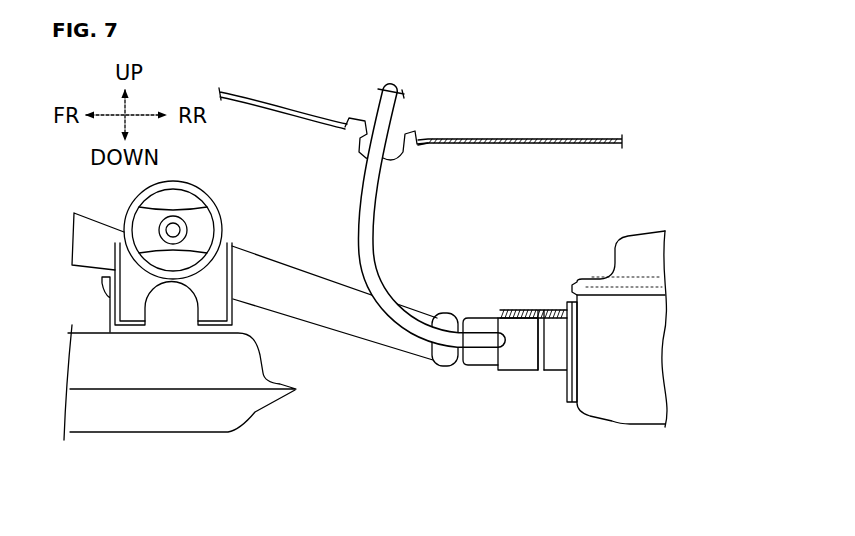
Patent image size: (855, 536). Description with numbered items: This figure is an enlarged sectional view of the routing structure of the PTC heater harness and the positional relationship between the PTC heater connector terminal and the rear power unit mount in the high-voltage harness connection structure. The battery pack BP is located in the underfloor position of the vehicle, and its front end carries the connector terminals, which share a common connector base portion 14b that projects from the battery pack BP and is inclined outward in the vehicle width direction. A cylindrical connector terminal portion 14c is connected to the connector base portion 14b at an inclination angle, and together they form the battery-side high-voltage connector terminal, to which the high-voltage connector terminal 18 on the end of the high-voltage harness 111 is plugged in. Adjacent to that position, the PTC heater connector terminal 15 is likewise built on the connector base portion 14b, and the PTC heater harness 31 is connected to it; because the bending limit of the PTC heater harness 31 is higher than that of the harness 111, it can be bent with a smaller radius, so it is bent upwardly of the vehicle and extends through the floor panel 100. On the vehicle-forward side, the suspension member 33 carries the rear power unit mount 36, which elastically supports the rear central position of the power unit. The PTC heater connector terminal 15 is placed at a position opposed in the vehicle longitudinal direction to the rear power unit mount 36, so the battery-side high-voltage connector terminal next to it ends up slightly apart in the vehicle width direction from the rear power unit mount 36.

The suspension member 33 is at (263, 363).
The high-voltage harness 111 is at (308, 268).
The rear power unit mount 36 is at (205, 187).
The PTC heater harness 31 is at (377, 215).
The floor panel 100 is at (480, 136).
The high-voltage connector terminal 18 is at (482, 311).
The PTC heater connector terminal 15 is at (514, 349).
The connector terminal portion 14c is at (521, 316).
The connector base portion 14b is at (556, 317).
The battery pack BP is at (627, 233).